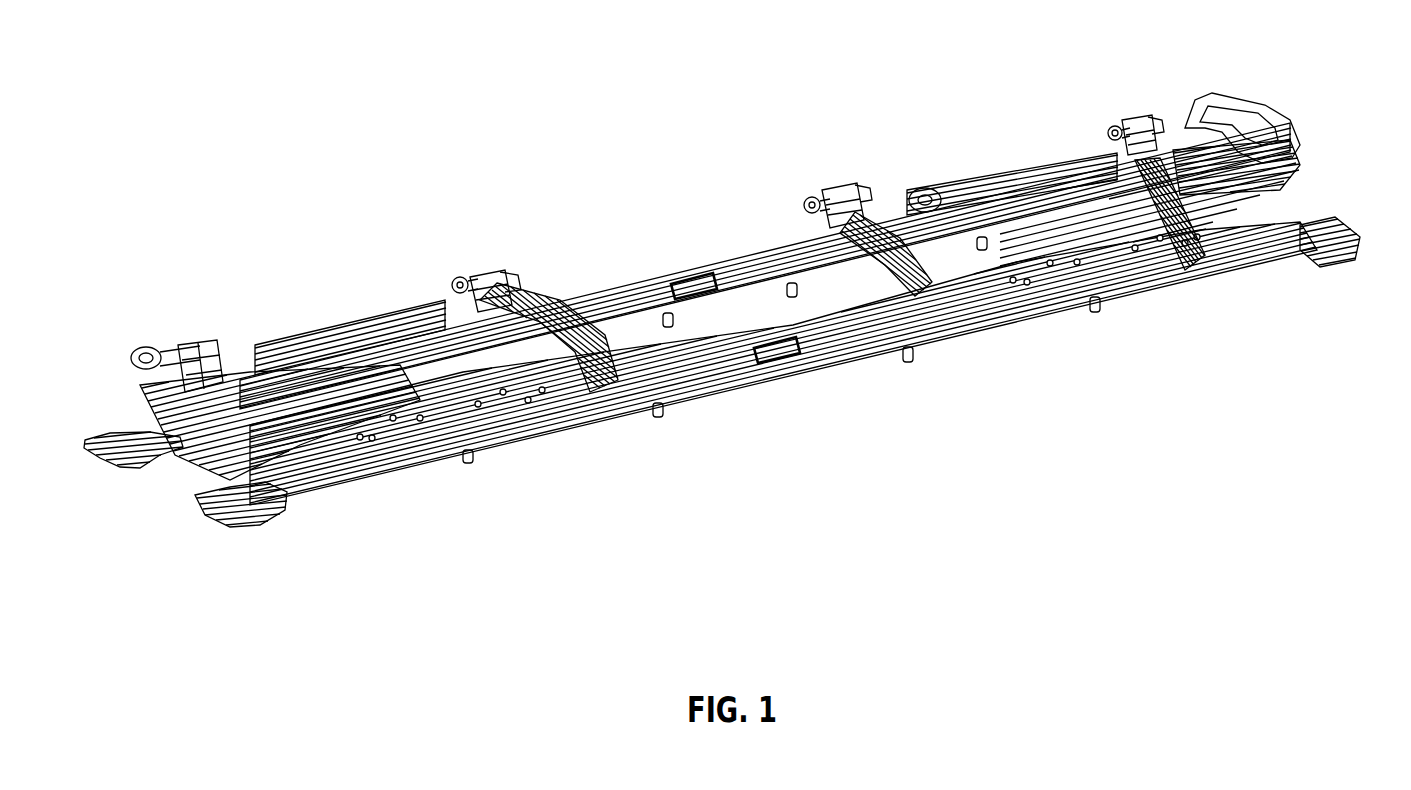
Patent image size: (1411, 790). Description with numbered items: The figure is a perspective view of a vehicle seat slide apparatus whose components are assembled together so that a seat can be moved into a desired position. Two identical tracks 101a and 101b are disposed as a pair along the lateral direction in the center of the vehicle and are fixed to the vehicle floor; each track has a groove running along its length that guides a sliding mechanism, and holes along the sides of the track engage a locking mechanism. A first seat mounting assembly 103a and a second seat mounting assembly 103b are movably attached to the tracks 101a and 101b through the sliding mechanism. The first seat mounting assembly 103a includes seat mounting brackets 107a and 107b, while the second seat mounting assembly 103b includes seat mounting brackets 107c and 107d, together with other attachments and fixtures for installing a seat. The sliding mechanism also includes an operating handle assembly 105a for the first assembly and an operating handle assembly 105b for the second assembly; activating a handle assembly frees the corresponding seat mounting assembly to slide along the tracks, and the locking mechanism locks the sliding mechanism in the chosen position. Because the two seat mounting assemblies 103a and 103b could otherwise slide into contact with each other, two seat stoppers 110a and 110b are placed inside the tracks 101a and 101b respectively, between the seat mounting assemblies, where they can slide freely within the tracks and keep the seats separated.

The track 101a is at (622, 290).
The track 101b is at (693, 383).
The seat mounting assembly 103a is at (337, 318).
The seat mounting assembly 103b is at (978, 167).
The operating handle assembly 105a is at (180, 437).
The operating handle assembly 105b is at (1297, 163).
The seat mounting bracket 107a is at (185, 343).
The seat mounting bracket 107b is at (480, 273).
The seat mounting bracket 107c is at (833, 187).
The seat mounting bracket 107d is at (1133, 125).
The seat stopper 110a is at (697, 275).
The seat stopper 110b is at (798, 357).